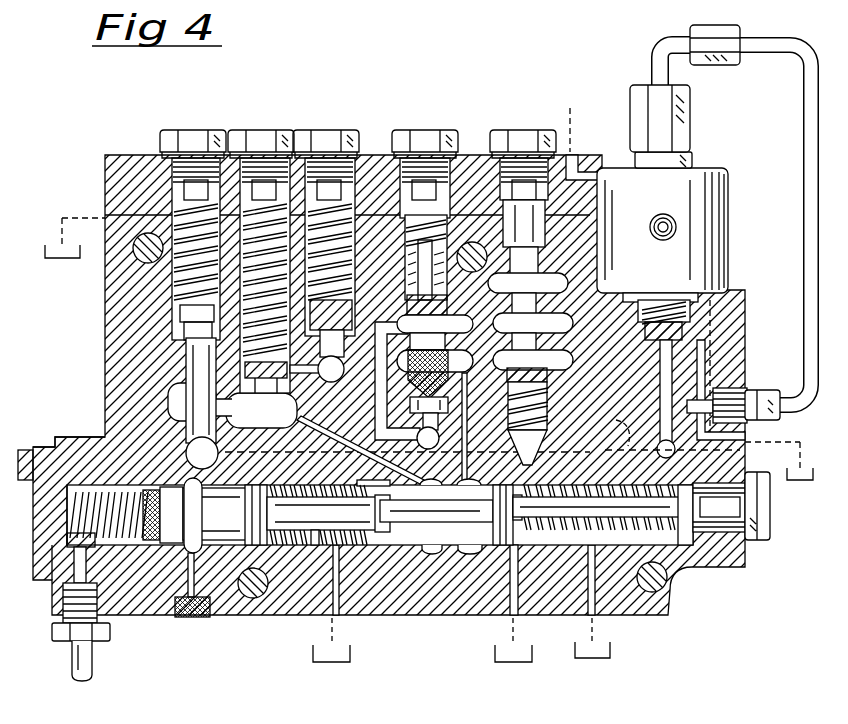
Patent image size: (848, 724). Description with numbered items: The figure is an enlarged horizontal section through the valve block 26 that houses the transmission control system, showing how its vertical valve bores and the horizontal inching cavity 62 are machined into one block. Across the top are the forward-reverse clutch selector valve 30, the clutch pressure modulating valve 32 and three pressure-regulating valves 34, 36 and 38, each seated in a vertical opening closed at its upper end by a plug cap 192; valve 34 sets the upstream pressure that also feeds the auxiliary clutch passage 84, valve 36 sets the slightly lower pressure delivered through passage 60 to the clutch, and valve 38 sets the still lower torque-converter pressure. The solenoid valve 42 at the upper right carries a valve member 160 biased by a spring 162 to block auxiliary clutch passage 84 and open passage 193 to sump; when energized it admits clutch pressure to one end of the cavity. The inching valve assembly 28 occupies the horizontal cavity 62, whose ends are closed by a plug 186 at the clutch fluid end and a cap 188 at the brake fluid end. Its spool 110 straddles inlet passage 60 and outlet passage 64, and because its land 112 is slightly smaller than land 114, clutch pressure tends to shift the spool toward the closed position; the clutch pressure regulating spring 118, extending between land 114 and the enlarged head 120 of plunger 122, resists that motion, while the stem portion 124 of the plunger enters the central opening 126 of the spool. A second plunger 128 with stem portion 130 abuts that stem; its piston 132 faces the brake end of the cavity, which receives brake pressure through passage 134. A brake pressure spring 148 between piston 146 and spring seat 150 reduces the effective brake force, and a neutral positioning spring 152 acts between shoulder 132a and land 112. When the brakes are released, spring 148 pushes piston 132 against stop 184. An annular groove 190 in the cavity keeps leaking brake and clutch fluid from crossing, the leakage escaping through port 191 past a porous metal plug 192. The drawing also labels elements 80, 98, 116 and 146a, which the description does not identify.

The valve block 26 is at (72, 138).
The inching valve assembly 28 is at (542, 548).
The forward-reverse clutch selector valve 30 is at (553, 115).
The clutch pressure modulating valve 32 is at (433, 120).
The pressure-regulating valve 34 is at (207, 122).
The pressure-regulating valve 36 is at (259, 122).
The pressure-regulating valve 38 is at (333, 122).
The solenoid valve 42 is at (728, 218).
The passage 60 is at (372, 464).
The inching valve cavity 62 is at (462, 480).
The passage 64 is at (508, 418).
The conduit / tube 80 is at (571, 122).
The auxiliary clutch passage 84 is at (610, 429).
The passage 98 is at (375, 410).
The inching valve spool 110 is at (483, 548).
The land 112 is at (415, 540).
The land 114 is at (550, 525).
The inclined passage 116 is at (420, 486).
The clutch pressure regulating spring 118 is at (607, 530).
The enlarged head 120 is at (688, 534).
The plunger 122 is at (652, 532).
The stem portion 124 is at (653, 405).
The central opening 126 is at (466, 483).
The second plunger 128 is at (363, 548).
The stem portion 130 is at (405, 548).
The piston 132 is at (165, 545).
The shoulder 132a is at (318, 548).
The passage 134 is at (72, 668).
The piston 146 is at (238, 548).
The spool groove 146a is at (268, 548).
The brake pressure spring 148 is at (300, 548).
The spring seat 150 is at (383, 538).
The neutral positioning spring 152 is at (380, 547).
The valve member 160 is at (690, 324).
The spring 162 is at (688, 310).
The stop 184 is at (83, 478).
The plug 186 is at (770, 533).
The cap 188 is at (35, 542).
The annular groove 190 is at (200, 548).
The port 191 is at (210, 600).
The porous metal plug 192 is at (524, 128).
The passage 193 is at (720, 461).